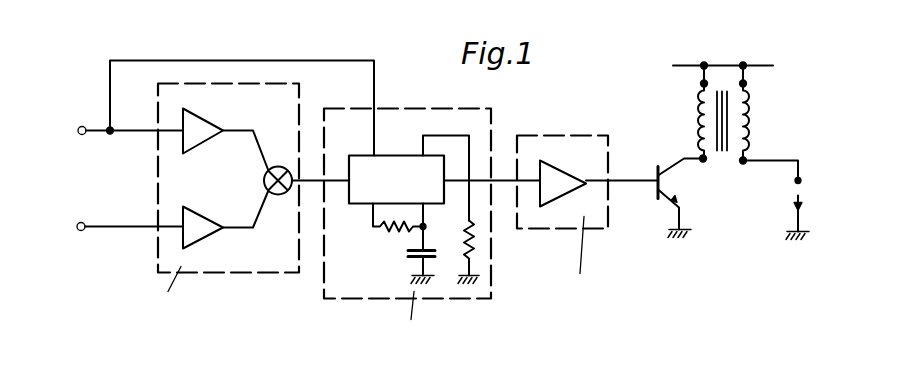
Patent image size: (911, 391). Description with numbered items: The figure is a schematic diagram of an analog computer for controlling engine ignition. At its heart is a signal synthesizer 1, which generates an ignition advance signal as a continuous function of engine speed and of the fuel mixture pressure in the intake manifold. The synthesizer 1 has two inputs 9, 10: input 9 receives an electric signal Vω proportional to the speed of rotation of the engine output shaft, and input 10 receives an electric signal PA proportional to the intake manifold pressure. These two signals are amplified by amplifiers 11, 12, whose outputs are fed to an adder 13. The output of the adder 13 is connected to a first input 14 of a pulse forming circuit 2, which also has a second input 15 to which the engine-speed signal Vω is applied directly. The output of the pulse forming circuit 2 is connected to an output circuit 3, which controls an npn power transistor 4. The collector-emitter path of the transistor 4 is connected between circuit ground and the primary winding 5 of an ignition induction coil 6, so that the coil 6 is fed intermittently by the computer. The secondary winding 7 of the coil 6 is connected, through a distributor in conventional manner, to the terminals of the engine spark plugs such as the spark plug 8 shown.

The signal synthesizer 1 is at (262, 255).
The pulse forming circuit 2 is at (357, 283).
The output circuit 3 is at (563, 213).
The npn power transistor 4 is at (655, 191).
The primary winding 5 is at (695, 120).
The ignition induction coil 6 is at (722, 76).
The secondary winding 7 is at (750, 125).
The spark plug 8 is at (800, 181).
The input 9 is at (98, 121).
The input 10 is at (120, 225).
The amplifier 11 is at (204, 115).
The amplifier 12 is at (208, 210).
The adder 13 is at (260, 173).
The first input 14 is at (340, 179).
The second input 15 is at (376, 84).